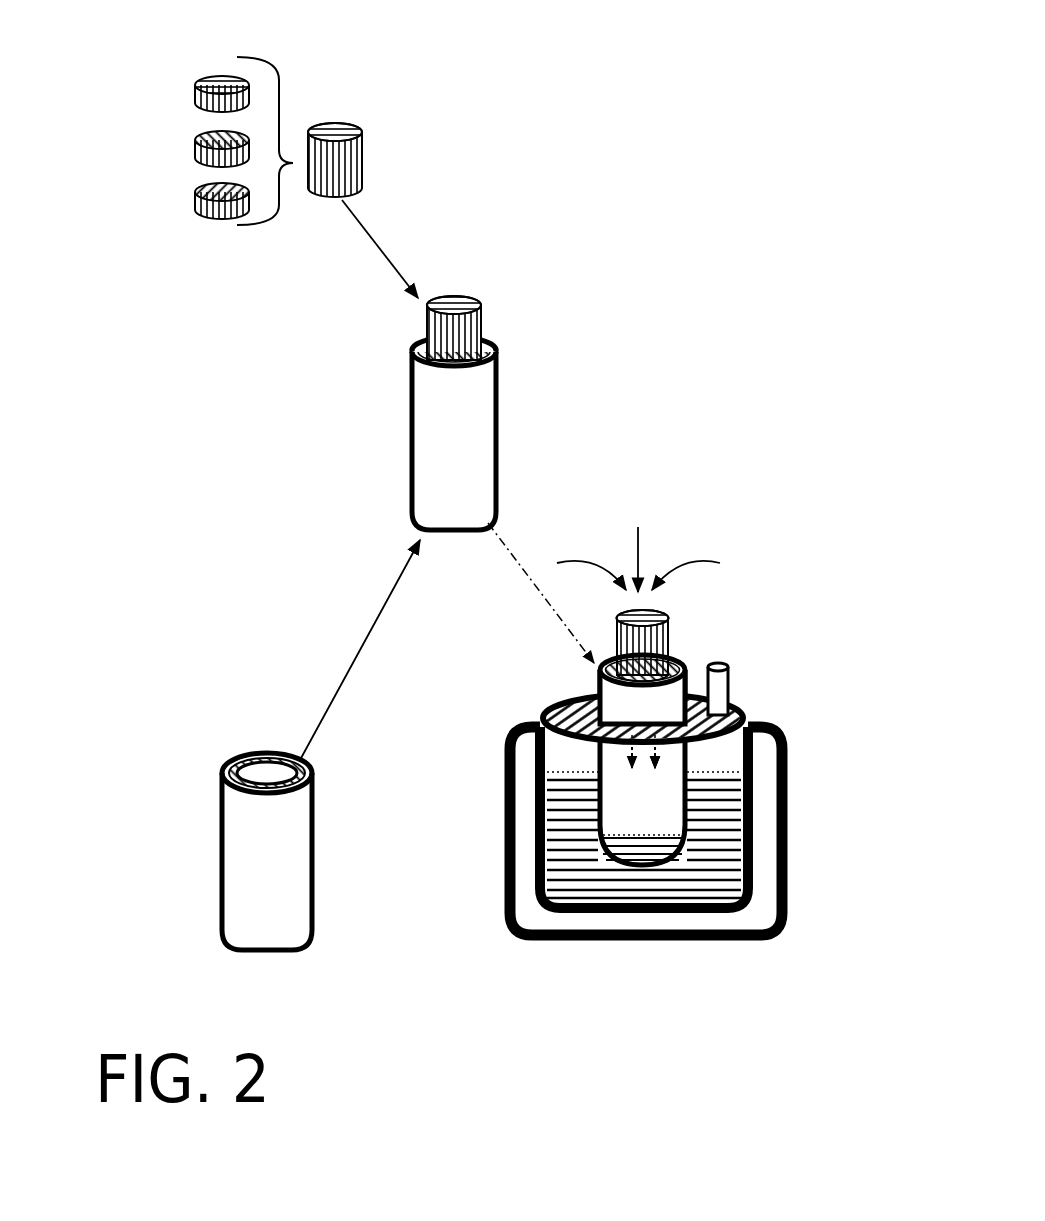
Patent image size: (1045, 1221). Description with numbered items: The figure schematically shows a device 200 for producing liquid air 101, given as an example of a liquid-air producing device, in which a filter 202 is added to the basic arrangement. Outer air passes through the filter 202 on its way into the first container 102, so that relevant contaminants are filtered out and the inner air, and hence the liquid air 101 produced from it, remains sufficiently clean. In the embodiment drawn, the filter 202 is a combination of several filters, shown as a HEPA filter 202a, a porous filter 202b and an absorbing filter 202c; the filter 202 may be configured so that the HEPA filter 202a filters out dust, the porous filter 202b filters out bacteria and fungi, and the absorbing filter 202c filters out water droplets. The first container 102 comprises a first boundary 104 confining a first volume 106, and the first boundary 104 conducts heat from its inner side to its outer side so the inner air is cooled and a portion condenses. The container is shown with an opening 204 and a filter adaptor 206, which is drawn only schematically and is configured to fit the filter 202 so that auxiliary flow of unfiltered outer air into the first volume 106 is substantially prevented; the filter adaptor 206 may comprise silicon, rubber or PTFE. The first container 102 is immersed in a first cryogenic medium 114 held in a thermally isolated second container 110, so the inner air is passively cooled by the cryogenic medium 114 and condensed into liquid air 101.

The device for producing liquid air 200 is at (600, 128).
The filter 202 is at (355, 124).
The HEPA filter 202a is at (195, 90).
The porous filter 202b is at (195, 142).
The absorbing filter 202c is at (195, 196).
The opening of the first container 204 is at (265, 778).
The filter adaptor 206 is at (230, 765).
The first container 102 is at (183, 782).
The first boundary 104 is at (222, 843).
The first volume 106 is at (272, 870).
The second container 110 is at (507, 913).
The first cryogenic medium 114 is at (605, 880).
The liquid air 101 is at (685, 848).